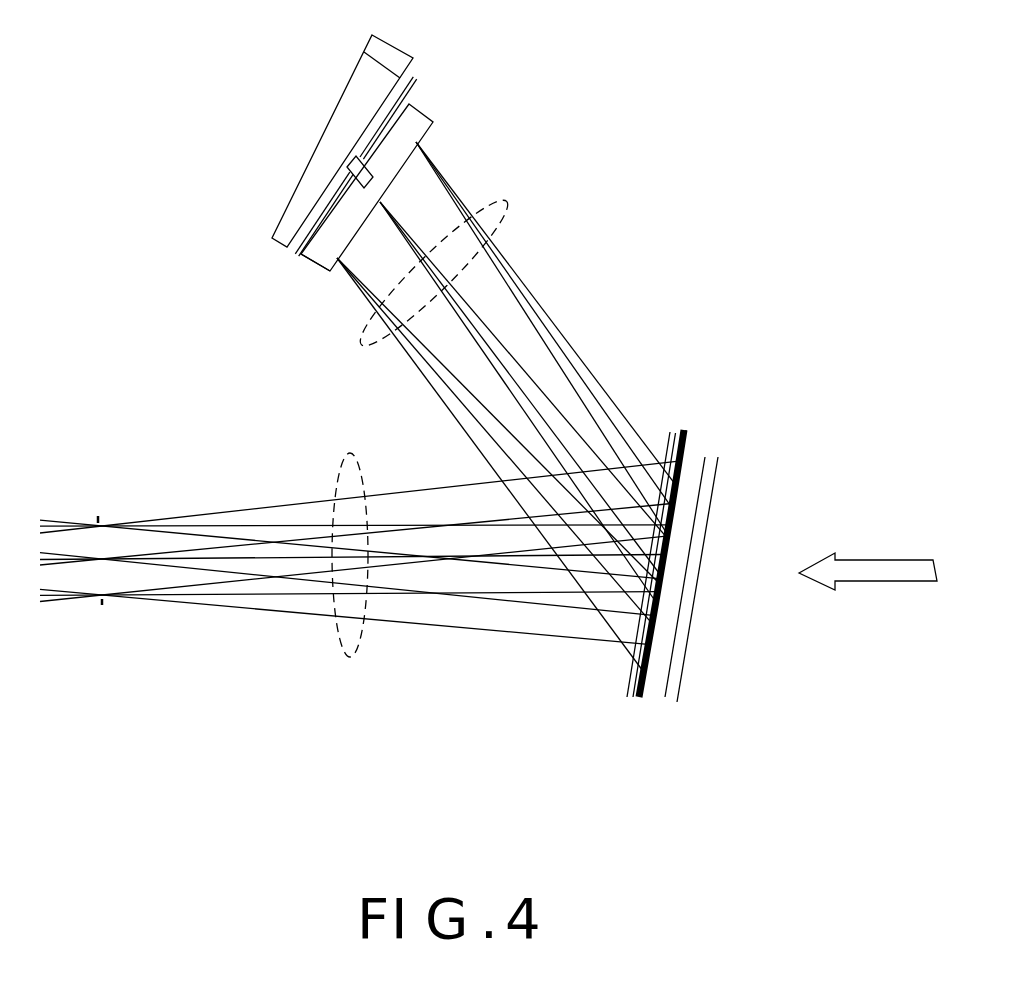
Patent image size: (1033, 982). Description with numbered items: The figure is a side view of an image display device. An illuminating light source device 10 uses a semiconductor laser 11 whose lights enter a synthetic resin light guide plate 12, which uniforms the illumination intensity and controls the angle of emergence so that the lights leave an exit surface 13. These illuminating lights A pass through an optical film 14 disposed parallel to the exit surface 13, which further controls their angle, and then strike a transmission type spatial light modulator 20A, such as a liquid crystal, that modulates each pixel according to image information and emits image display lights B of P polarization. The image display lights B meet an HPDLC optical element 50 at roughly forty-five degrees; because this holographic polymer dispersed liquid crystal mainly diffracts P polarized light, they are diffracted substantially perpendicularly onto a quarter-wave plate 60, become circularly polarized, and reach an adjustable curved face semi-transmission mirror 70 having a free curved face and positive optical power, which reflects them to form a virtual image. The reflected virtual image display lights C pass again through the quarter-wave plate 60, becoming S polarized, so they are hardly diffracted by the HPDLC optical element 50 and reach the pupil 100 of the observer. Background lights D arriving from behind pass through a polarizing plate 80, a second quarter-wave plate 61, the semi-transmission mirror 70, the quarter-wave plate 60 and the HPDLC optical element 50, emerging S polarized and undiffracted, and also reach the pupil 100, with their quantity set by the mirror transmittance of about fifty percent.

The illuminating light source device 10 is at (118, 75).
The semiconductor laser 11 is at (373, 50).
The light guide plate 12 is at (355, 103).
The exit surface 13 is at (398, 97).
The optical film 14 is at (287, 261).
The transmission type spatial light modulator 20A is at (315, 255).
The HPDLC optical element 50 is at (670, 432).
The quarter-wave plate 60 is at (625, 672).
The second quarter-wave plate 61 is at (665, 697).
The adjustable curved face semi-transmission mirror 70 is at (685, 426).
The polarizing plate 80 is at (685, 692).
The pupil 100 is at (100, 608).
The illuminating lights A is at (373, 173).
The image display lights B is at (505, 203).
The virtual image display lights C is at (352, 653).
The background lights D is at (868, 555).